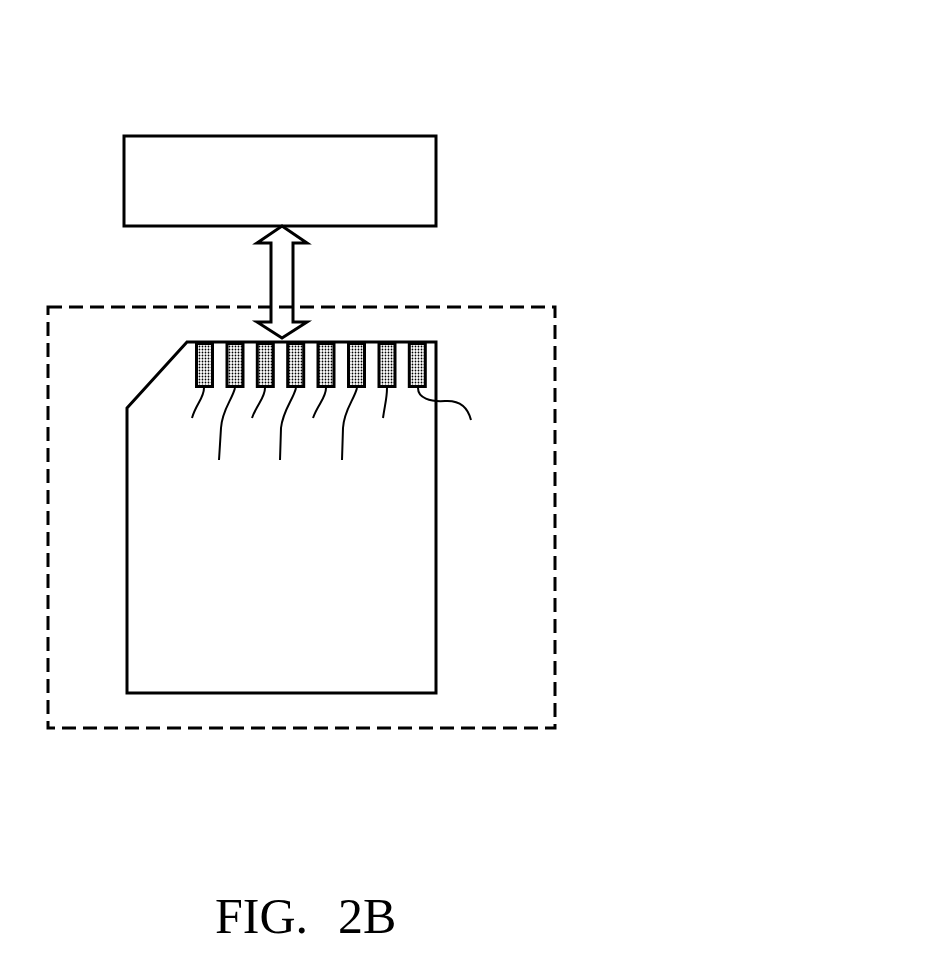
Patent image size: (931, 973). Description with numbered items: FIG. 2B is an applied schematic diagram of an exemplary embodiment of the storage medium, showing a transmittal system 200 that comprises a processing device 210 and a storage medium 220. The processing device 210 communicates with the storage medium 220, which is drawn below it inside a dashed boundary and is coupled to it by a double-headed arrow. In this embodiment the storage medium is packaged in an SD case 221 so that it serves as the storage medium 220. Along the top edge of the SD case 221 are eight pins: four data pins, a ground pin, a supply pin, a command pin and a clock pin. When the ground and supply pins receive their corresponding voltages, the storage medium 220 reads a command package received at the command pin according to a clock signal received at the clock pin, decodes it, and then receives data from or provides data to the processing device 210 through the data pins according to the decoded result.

The transmittal system 200 is at (523, 91).
The processing device 210 is at (437, 181).
The storage medium 220 is at (556, 682).
The SD case 221 is at (437, 650).